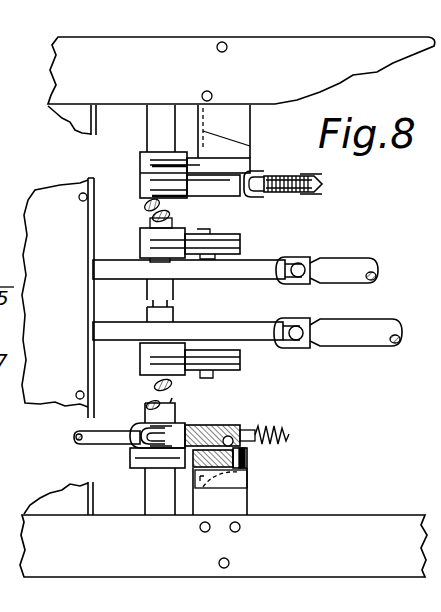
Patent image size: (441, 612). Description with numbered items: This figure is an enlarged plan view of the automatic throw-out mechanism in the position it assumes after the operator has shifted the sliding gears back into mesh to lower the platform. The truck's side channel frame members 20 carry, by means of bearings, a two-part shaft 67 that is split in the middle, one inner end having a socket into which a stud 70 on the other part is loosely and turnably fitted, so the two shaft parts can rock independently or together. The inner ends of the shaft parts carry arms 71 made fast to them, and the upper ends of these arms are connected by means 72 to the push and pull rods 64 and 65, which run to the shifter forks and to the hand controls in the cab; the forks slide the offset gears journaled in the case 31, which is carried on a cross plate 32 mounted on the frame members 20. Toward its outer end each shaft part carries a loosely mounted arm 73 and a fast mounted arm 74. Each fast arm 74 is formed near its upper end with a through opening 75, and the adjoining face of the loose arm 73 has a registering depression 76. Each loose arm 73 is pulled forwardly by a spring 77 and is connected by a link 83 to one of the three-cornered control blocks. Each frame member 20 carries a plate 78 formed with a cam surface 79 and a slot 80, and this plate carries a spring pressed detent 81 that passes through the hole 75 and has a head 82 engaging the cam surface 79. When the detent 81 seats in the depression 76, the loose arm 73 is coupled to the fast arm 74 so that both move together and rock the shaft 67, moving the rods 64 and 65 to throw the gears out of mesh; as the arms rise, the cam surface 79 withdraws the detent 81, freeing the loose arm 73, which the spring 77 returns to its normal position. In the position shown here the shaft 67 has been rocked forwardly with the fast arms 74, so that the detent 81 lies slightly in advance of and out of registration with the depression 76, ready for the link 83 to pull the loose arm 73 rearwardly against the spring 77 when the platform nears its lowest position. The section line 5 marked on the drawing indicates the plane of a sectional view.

The side channel frame members 20 is at (384, 64).
The plate 78 is at (262, 133).
The cam surface 79 is at (199, 133).
The head 82 is at (205, 140).
The slot 80 is at (250, 177).
The spring pressed detent 81 is at (322, 180).
The spring 77 is at (312, 196).
The depression 76 is at (228, 190).
The connecting means 72 is at (210, 224).
The arms 71 is at (272, 258).
The rod 65 is at (305, 257).
The two-part shaft 67 is at (173, 313).
The stud 70 is at (266, 331).
The rod 64 is at (308, 317).
The case 31 is at (47, 395).
The cross plate 32 is at (52, 488).
The links 83 is at (107, 442).
The fast mounted arm 74 is at (195, 440).
The loosely mounted arm 73 is at (197, 452).
The through opening 75 is at (252, 474).
The section line 5 is at (132, 458).